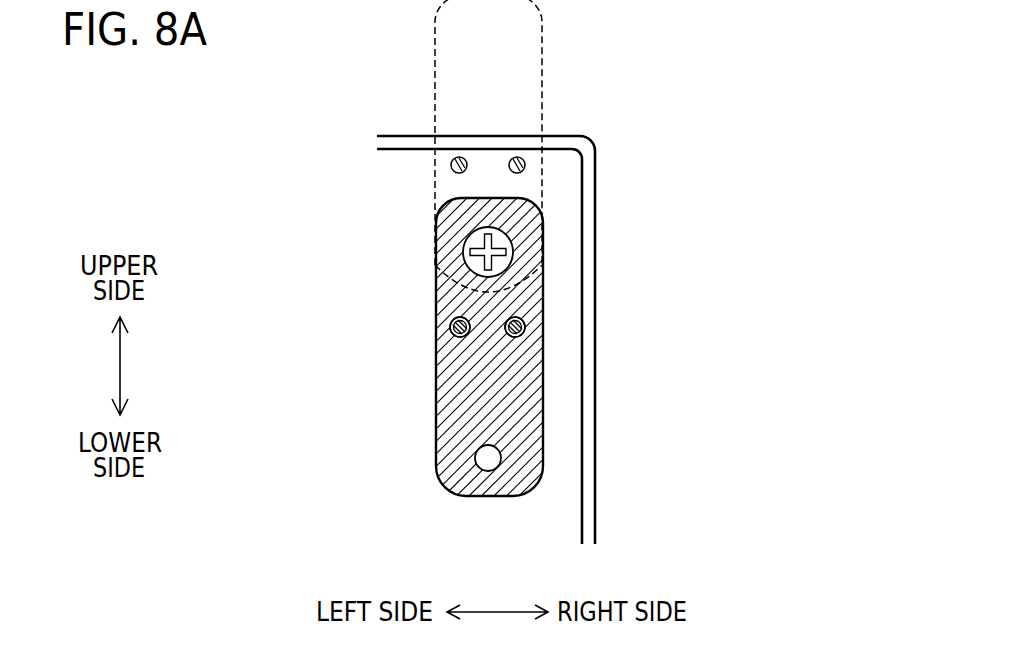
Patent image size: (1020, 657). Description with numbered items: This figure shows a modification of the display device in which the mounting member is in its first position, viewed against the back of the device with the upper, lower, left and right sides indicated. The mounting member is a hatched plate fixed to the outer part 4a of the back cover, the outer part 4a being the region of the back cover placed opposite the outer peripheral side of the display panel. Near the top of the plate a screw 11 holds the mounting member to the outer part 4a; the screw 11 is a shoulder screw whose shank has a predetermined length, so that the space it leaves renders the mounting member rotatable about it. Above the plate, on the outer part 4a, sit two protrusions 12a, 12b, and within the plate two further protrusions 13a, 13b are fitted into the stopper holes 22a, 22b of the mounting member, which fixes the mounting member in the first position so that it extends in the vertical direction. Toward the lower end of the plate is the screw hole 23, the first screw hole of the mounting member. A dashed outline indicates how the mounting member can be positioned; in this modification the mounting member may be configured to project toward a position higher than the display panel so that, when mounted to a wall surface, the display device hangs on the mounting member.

The outer part 4a is at (568, 453).
The screw 11 is at (463, 252).
The protrusion 12a is at (525, 165).
The protrusion 12b is at (451, 165).
The protrusion 13a is at (452, 332).
The protrusion 13b is at (523, 333).
The stopper hole 22a is at (450, 323).
The stopper hole 22b is at (525, 322).
The screw hole 23 is at (475, 461).